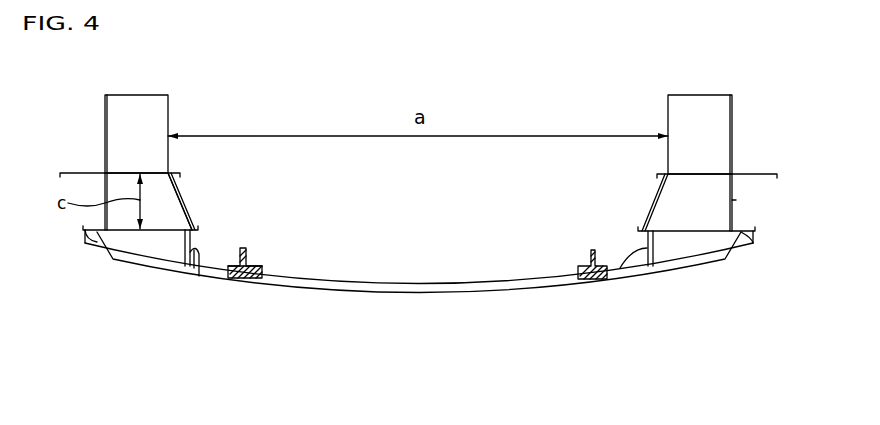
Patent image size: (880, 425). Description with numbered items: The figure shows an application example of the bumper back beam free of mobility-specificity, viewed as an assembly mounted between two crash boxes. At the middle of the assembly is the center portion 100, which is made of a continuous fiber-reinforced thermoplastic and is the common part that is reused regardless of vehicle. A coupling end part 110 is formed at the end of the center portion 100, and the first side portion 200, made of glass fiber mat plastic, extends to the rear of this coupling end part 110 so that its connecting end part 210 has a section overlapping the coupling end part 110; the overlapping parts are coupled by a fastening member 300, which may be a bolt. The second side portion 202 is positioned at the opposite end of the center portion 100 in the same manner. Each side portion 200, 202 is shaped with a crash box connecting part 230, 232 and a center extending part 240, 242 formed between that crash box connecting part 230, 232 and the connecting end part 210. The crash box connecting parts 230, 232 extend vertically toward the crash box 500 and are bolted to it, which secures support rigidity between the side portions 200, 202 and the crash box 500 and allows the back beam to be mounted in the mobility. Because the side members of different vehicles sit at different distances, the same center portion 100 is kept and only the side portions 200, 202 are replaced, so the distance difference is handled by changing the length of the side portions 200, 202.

The center portion 100 is at (411, 303).
The coupling end part 110 is at (263, 283).
The first side portion 200 is at (152, 277).
The second side portion 202 is at (686, 279).
The connecting end part 210 is at (217, 264).
The crash box connecting part 230 is at (199, 277).
The center extending part 240 is at (213, 273).
The crash box connecting part 232 is at (620, 268).
The center extending part 242 is at (636, 280).
The fastening member 300 is at (247, 250).
The crash box 500 is at (742, 213).